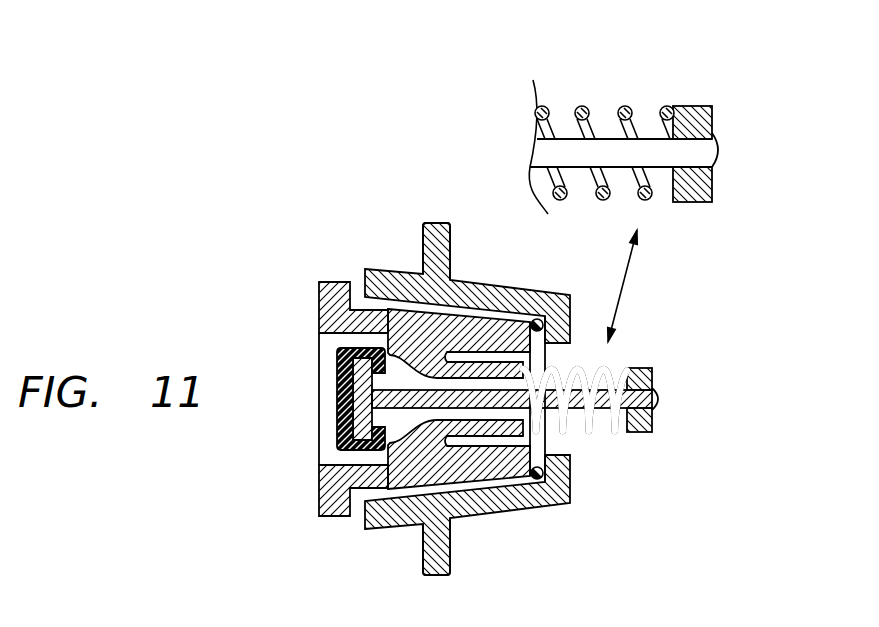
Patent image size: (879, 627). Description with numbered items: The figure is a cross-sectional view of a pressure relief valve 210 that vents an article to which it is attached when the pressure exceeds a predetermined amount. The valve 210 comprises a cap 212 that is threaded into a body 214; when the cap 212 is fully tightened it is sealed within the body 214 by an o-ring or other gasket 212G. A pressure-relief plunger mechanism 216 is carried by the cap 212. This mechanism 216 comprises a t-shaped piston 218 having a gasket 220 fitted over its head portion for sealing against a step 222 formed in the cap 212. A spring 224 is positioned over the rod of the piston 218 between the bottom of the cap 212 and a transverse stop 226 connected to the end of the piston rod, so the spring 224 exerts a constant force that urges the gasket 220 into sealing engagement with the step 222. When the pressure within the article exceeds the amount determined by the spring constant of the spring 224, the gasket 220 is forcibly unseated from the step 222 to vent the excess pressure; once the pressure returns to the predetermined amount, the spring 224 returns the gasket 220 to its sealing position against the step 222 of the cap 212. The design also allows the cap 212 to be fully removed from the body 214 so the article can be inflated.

The pressure relief valve 210 is at (722, 287).
The cap 212 is at (320, 483).
The o-ring 212G is at (540, 322).
The body 214 is at (390, 528).
The pressure-relief plunger mechanism 216 is at (690, 358).
The t-shaped piston 218 is at (451, 412).
The gasket 220 is at (337, 400).
The step 222 is at (408, 352).
The spring 224 is at (610, 432).
The transverse stop 226 is at (653, 430).